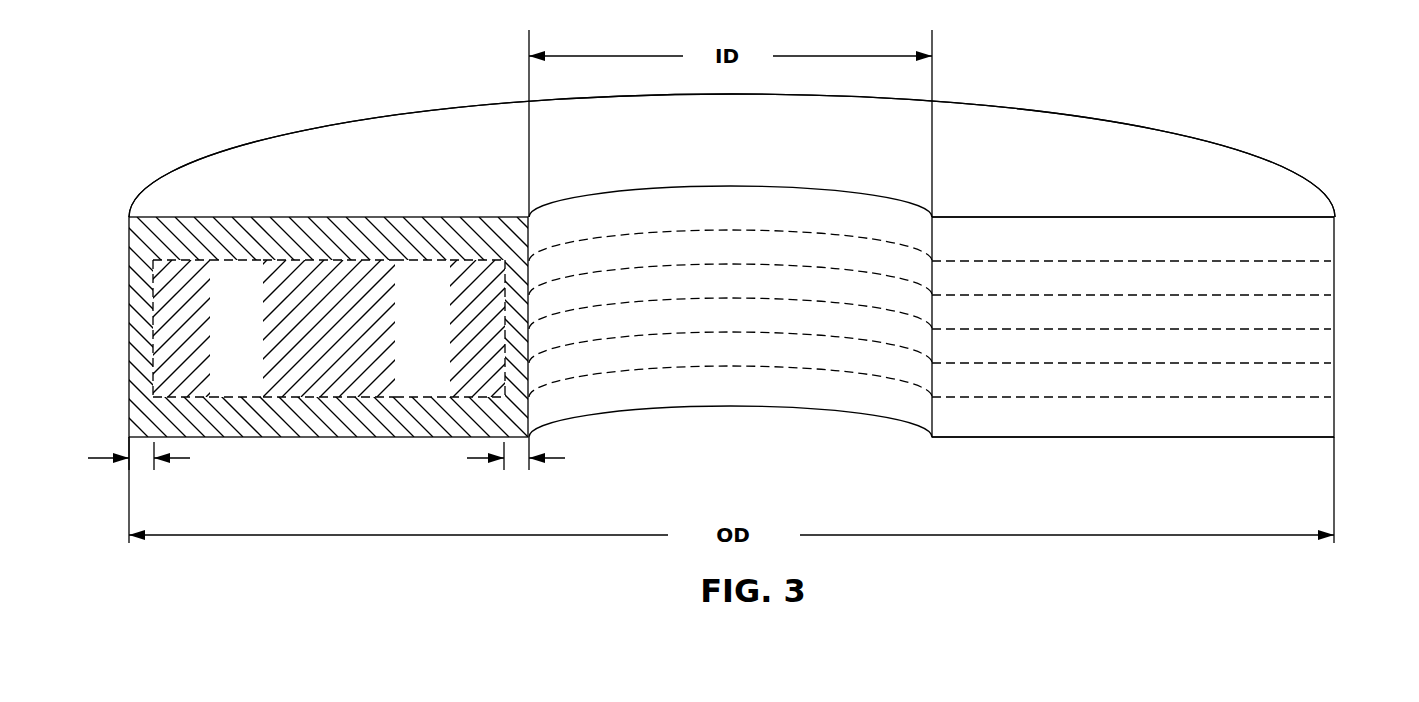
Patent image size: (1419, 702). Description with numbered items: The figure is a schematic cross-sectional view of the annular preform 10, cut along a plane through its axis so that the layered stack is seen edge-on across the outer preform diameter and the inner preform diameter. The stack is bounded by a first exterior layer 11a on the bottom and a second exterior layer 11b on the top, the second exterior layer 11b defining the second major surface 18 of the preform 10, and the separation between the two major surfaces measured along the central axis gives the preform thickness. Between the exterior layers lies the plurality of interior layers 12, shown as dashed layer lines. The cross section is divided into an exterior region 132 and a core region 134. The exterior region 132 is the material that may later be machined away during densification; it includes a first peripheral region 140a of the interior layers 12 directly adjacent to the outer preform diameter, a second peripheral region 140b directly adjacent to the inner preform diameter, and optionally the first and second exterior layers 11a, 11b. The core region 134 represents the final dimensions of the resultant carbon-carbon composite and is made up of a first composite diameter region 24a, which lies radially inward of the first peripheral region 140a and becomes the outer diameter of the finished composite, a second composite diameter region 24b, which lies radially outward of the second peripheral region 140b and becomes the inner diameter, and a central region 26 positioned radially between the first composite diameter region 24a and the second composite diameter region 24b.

The preform 10 is at (229, 125).
The second major surface 18 is at (1016, 140).
The first exterior layer 11a is at (1092, 418).
The second exterior layer 11b is at (1097, 238).
The plurality of interior layers 12 is at (1345, 265).
The exterior region 132 is at (317, 240).
The core region 134 is at (440, 260).
The first composite diameter region 24a is at (172, 330).
The second composite diameter region 24b is at (483, 339).
The central region 26 is at (329, 340).
The first peripheral region 140a is at (140, 455).
The second peripheral region 140b is at (513, 458).